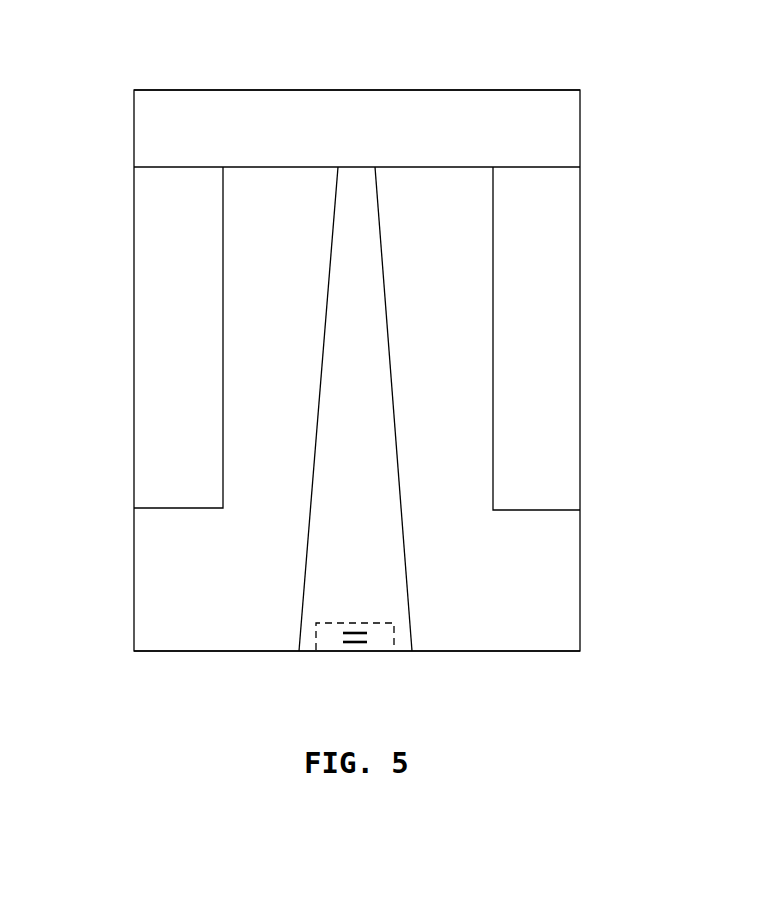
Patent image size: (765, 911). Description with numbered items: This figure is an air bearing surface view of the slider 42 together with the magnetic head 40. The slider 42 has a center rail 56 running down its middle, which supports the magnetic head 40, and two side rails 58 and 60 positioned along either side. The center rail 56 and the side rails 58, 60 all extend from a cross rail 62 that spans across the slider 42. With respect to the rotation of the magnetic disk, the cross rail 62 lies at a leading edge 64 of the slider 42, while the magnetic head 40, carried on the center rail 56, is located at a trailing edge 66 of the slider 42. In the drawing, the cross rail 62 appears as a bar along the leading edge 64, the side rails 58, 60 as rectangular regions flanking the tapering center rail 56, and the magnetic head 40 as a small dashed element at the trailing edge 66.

The magnetic head 40 is at (333, 642).
The slider 42 is at (124, 600).
The center rail 56 is at (340, 283).
The side rail 58 is at (148, 246).
The side rail 60 is at (565, 250).
The cross rail 62 is at (279, 100).
The leading edge 64 is at (459, 91).
The trailing edge 66 is at (477, 651).